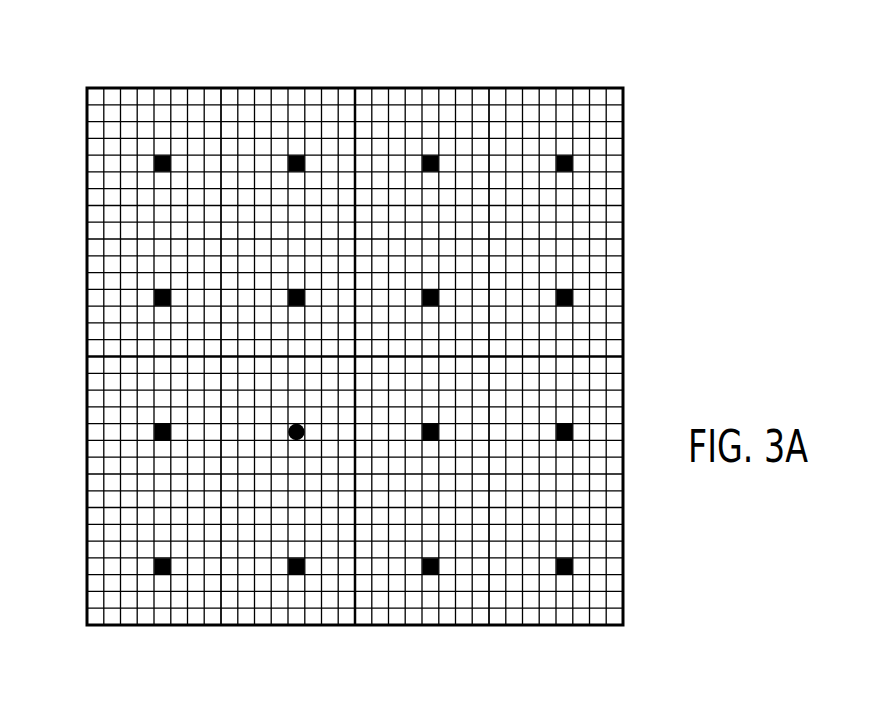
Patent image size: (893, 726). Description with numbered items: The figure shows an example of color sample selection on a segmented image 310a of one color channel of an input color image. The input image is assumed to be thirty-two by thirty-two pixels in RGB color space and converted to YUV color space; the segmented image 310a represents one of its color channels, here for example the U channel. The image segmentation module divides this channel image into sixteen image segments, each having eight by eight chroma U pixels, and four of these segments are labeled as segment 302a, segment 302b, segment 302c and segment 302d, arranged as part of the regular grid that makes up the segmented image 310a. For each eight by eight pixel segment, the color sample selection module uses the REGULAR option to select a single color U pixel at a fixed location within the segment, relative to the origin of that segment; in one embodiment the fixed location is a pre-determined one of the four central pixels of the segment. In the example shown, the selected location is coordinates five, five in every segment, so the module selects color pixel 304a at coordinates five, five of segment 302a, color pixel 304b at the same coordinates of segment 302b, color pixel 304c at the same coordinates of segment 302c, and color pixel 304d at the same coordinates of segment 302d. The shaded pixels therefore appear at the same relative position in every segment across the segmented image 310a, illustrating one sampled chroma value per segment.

The segment 302a is at (150, 88).
The segment 302b is at (285, 88).
The segment 302c is at (425, 88).
The segment 302d is at (553, 88).
The color pixel 304a is at (153, 165).
The color pixel 304b is at (290, 166).
The color pixel 304c is at (440, 166).
The color pixel 304d is at (574, 162).
The segmented image 310a is at (623, 355).